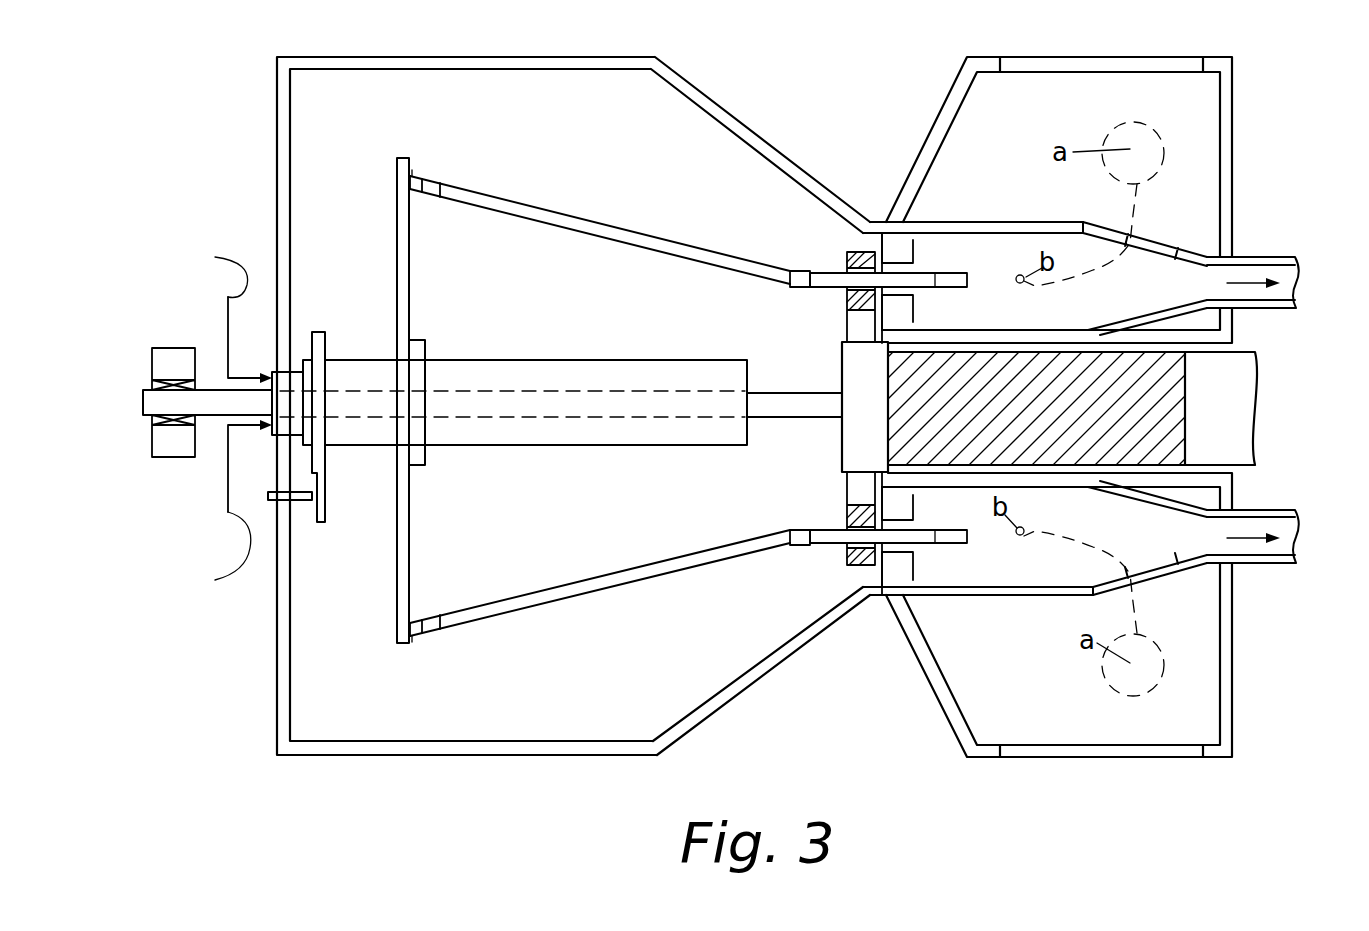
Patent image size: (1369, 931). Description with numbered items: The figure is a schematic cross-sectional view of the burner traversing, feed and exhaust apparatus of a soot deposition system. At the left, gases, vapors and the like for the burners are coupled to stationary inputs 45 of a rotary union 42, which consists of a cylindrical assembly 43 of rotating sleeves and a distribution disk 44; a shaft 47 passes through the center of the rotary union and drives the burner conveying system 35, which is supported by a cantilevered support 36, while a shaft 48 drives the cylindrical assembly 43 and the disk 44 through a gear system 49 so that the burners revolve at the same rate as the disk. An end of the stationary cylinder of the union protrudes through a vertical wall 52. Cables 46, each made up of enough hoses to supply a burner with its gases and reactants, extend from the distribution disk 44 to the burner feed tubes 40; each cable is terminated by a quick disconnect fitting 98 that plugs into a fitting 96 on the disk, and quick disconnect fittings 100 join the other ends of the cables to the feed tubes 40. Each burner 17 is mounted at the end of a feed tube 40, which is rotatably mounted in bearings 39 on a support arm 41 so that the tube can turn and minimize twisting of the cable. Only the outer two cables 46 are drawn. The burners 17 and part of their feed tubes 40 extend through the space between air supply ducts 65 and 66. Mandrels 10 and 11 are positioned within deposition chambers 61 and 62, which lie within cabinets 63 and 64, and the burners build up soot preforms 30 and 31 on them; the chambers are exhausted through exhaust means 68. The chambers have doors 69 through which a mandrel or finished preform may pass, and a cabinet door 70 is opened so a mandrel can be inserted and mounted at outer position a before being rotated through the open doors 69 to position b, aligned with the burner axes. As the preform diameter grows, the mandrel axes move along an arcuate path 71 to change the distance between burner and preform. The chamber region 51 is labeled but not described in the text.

The mandrel 10 is at (1018, 275).
The mandrel 11 is at (1025, 528).
The burner 17 is at (958, 282).
The preform 30 is at (1122, 128).
The soot preform 31 is at (1108, 681).
The burner conveying system 35 is at (828, 453).
The cantilevered support 36 is at (1252, 414).
The bearing 39 is at (850, 262).
The feed tube 40 is at (818, 278).
The support arm 41 is at (857, 327).
The rotary union 42 is at (500, 325).
The cylindrical assembly 43 is at (568, 447).
The distribution disk 44 is at (411, 265).
The stationary input 45 is at (228, 319).
The cable 46 is at (542, 205).
The shaft 47 is at (162, 399).
The shaft 48 is at (303, 501).
The gear system 49 is at (330, 462).
The chamber 51 is at (630, 314).
The vertical wall 52 is at (277, 140).
The deposition chamber 61 is at (1052, 326).
The deposition chamber 62 is at (1040, 571).
The cabinet 63 is at (1232, 154).
The cabinet 64 is at (1232, 676).
The air supply duct 65 is at (913, 263).
The air supply duct 66 is at (913, 322).
The exhaust means 68 is at (1270, 248).
The door 69 is at (1153, 247).
The cabinet door 70 is at (1103, 57).
The arcuate path 71 is at (1134, 212).
The fitting 96 is at (416, 174).
The quick disconnect fitting 98 is at (430, 185).
The quick disconnect fitting 100 is at (800, 280).